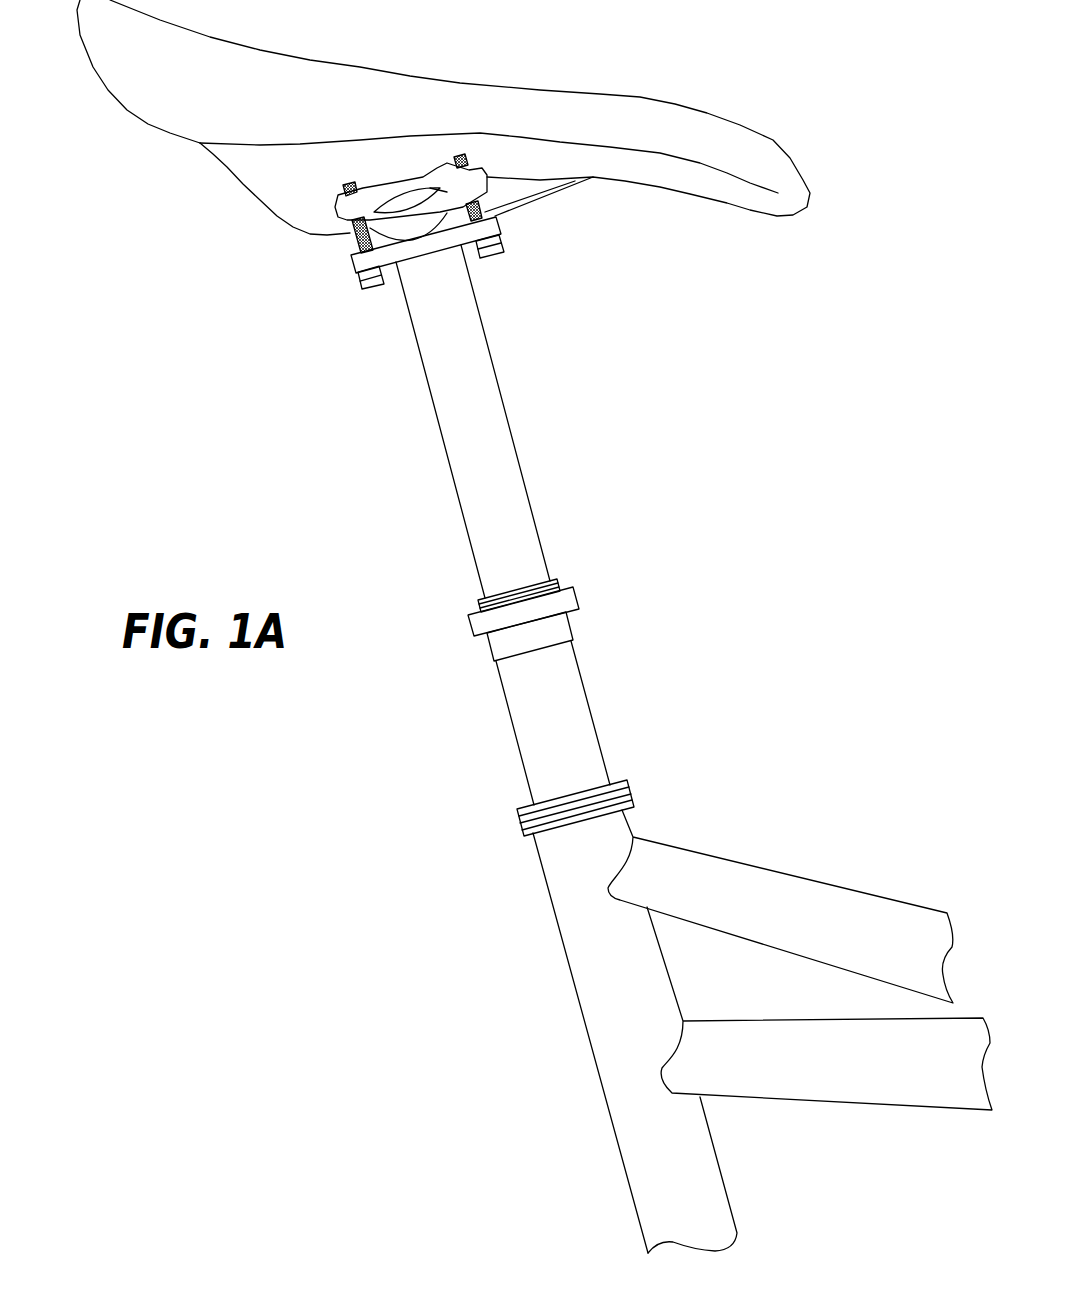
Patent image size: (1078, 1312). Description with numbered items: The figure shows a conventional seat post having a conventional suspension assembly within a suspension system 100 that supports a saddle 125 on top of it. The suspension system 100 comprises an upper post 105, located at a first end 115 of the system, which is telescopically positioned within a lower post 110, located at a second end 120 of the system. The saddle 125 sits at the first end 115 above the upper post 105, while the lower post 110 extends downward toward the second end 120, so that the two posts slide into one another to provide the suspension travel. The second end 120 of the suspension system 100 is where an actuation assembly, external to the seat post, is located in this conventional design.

The suspension system 100 is at (724, 777).
The upper post 105 is at (455, 462).
The lower post 110 is at (597, 730).
The first end 115 is at (412, 303).
The second end 120 is at (528, 778).
The saddle 125 is at (465, 85).